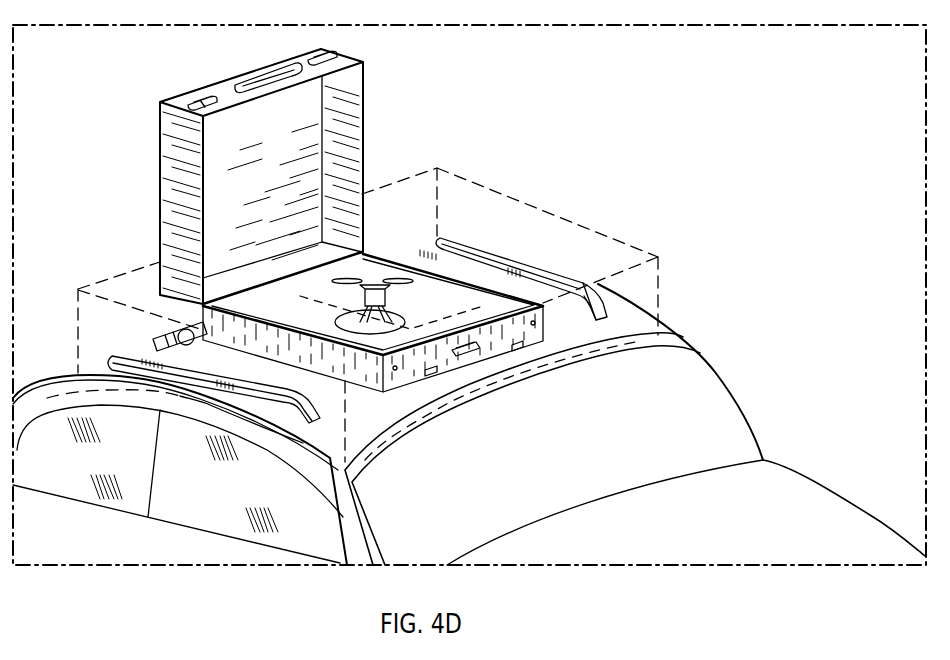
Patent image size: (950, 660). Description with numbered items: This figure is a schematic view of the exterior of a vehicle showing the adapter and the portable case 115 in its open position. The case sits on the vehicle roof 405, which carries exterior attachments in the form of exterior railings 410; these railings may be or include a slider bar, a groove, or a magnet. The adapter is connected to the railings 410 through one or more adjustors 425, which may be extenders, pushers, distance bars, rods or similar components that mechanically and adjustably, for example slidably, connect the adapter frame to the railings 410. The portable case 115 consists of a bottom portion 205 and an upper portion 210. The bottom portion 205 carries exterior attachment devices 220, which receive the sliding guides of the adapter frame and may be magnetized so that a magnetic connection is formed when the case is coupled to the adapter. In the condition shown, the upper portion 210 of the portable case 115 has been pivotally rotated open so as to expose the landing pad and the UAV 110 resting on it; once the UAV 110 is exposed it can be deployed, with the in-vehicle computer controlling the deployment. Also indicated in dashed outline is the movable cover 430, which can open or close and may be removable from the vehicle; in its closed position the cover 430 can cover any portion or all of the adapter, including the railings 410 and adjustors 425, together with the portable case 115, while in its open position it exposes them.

The UAV 110 is at (374, 284).
The portable case 115 is at (158, 110).
The bottom portion 205 is at (546, 320).
The upper portion 210 is at (342, 140).
The exterior attachment devices 220 is at (524, 349).
The vehicle roof 405 is at (360, 403).
The exterior railing 410 is at (512, 268).
The adjustor 425 is at (165, 342).
The movable cover 430 is at (660, 280).